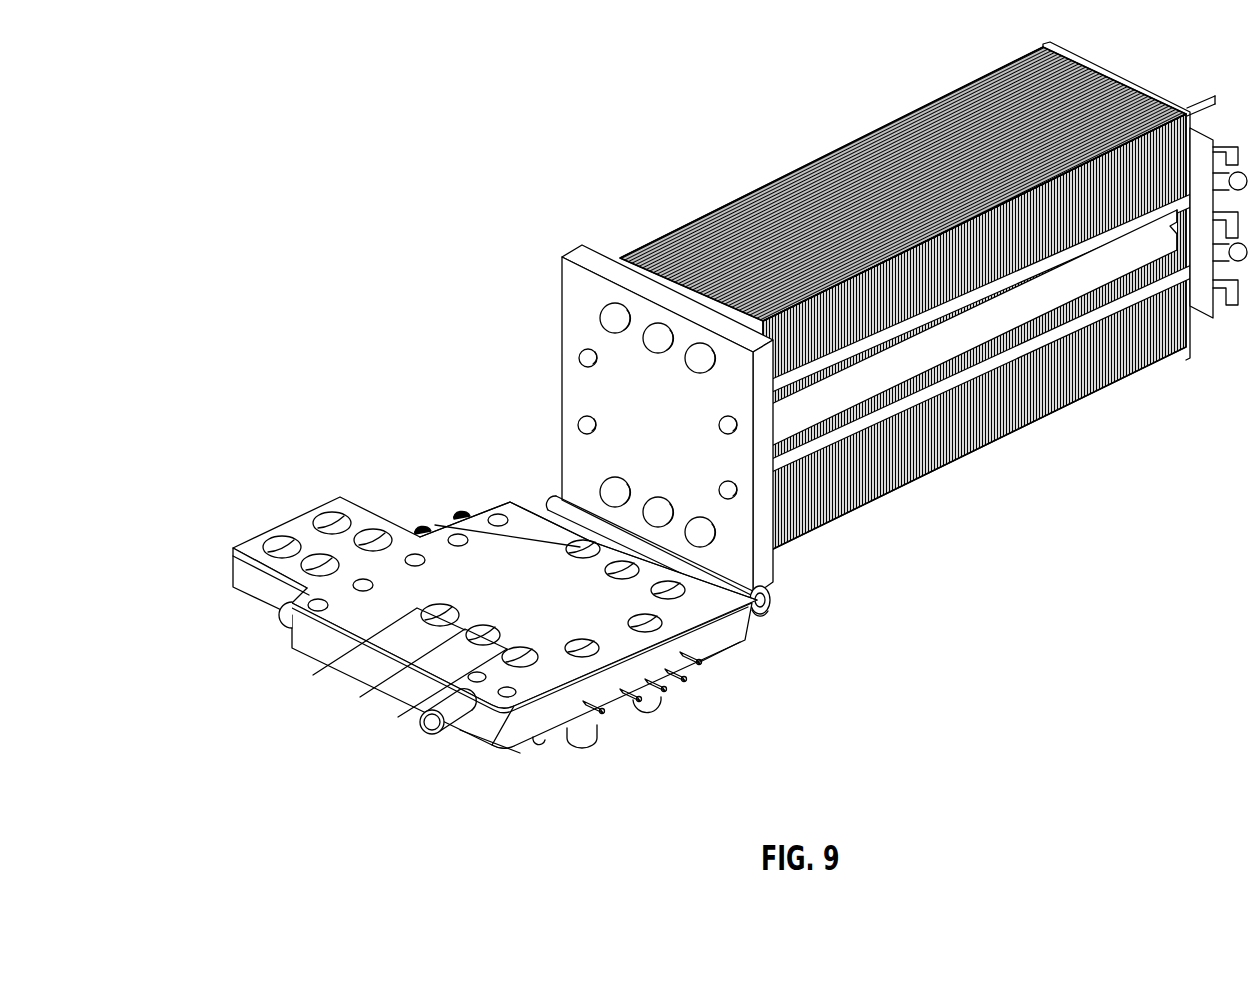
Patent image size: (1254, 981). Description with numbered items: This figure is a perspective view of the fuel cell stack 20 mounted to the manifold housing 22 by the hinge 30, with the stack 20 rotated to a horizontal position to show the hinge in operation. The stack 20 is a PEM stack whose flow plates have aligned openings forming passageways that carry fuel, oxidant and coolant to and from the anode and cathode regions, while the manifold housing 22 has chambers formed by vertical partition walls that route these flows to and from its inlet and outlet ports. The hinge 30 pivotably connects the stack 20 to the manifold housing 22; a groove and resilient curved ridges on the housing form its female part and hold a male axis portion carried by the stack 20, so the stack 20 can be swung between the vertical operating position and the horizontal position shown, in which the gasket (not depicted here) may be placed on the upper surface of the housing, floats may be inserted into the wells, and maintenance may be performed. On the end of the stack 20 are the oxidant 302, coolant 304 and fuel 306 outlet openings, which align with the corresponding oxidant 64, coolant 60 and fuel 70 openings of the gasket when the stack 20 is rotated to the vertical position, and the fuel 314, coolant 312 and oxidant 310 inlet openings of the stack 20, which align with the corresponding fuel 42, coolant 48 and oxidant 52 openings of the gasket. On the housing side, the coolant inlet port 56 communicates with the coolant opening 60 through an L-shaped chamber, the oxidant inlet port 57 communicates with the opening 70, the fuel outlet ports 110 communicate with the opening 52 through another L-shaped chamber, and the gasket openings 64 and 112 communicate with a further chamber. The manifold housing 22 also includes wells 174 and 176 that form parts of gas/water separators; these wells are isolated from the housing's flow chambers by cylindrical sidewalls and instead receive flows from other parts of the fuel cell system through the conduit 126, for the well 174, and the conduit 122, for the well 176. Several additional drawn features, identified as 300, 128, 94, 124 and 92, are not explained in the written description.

The fuel cell stack 20 is at (800, 170).
The end plate 300 is at (556, 417).
The oxidant outlet opening 302 is at (615, 314).
The coolant outlet opening 304 is at (658, 337).
The fuel outlet opening 306 is at (698, 364).
The fuel inlet opening 314 is at (753, 597).
The hinge 30 is at (810, 584).
The oxidant inlet opening 310 is at (801, 611).
The coolant inlet opening 312 is at (800, 631).
The manifold housing 22 is at (524, 622).
The oxidant opening of gasket 52 is at (698, 625).
The fuel opening of gasket 42 is at (505, 500).
The coolant opening of gasket 48 is at (450, 527).
The fuel outlet ports 110 is at (372, 538).
The gasket opening 112 is at (320, 560).
The coolant inlet port 56 is at (241, 635).
The oxidant opening of gasket 64 is at (313, 675).
The coolant opening of gasket 60 is at (360, 697).
The fuel opening of gasket 70 is at (398, 717).
The oxidant inlet port 57 is at (409, 728).
The well 174 is at (598, 722).
The pin 128 is at (567, 774).
The pin 94 is at (650, 767).
The conduit 126 is at (662, 700).
The well 176 is at (681, 734).
The pin 124 is at (699, 705).
The pin 92 is at (738, 695).
The conduit 122 is at (753, 703).